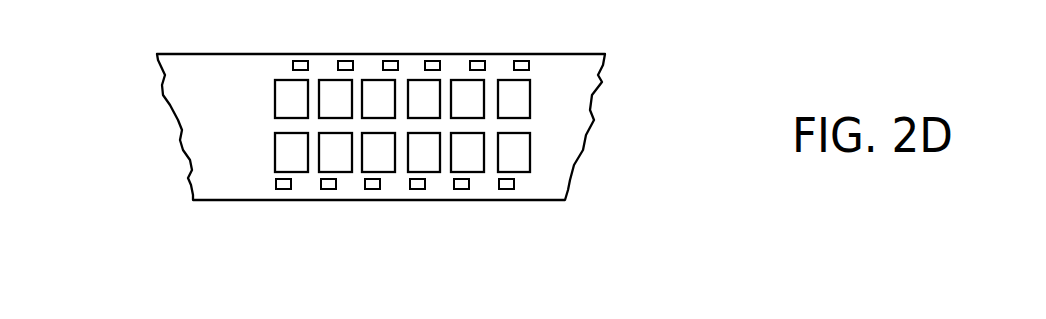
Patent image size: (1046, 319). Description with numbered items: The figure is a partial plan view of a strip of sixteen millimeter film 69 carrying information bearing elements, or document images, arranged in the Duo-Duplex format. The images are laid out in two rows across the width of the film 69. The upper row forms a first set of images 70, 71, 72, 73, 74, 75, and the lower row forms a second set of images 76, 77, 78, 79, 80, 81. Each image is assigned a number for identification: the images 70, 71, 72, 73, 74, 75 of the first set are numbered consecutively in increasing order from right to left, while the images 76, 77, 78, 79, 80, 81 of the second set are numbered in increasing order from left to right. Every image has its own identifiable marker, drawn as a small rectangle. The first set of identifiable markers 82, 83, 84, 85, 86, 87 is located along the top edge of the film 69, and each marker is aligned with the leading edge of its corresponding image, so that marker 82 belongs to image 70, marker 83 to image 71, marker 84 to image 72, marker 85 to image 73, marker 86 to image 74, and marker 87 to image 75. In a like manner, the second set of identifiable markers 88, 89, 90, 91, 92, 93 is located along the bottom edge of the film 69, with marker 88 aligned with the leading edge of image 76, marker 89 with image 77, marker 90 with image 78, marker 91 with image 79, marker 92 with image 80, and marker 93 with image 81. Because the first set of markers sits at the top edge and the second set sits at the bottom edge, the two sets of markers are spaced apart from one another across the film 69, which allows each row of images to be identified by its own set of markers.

The film 69 is at (233, 186).
The image 70 is at (506, 80).
The image 71 is at (459, 80).
The image 72 is at (416, 80).
The image 73 is at (370, 80).
The image 74 is at (327, 80).
The image 75 is at (283, 80).
The image 76 is at (294, 172).
The image 77 is at (338, 172).
The image 78 is at (381, 172).
The image 79 is at (427, 172).
The image 80 is at (470, 172).
The image 81 is at (517, 172).
The identifiable marker 82 is at (521, 61).
The identifiable marker 83 is at (477, 61).
The identifiable marker 84 is at (432, 61).
The identifiable marker 85 is at (390, 61).
The identifiable marker 86 is at (345, 61).
The identifiable marker 87 is at (300, 61).
The identifiable marker 88 is at (284, 189).
The identifiable marker 89 is at (329, 189).
The identifiable marker 90 is at (373, 189).
The identifiable marker 91 is at (418, 189).
The identifiable marker 92 is at (462, 189).
The identifiable marker 93 is at (507, 189).